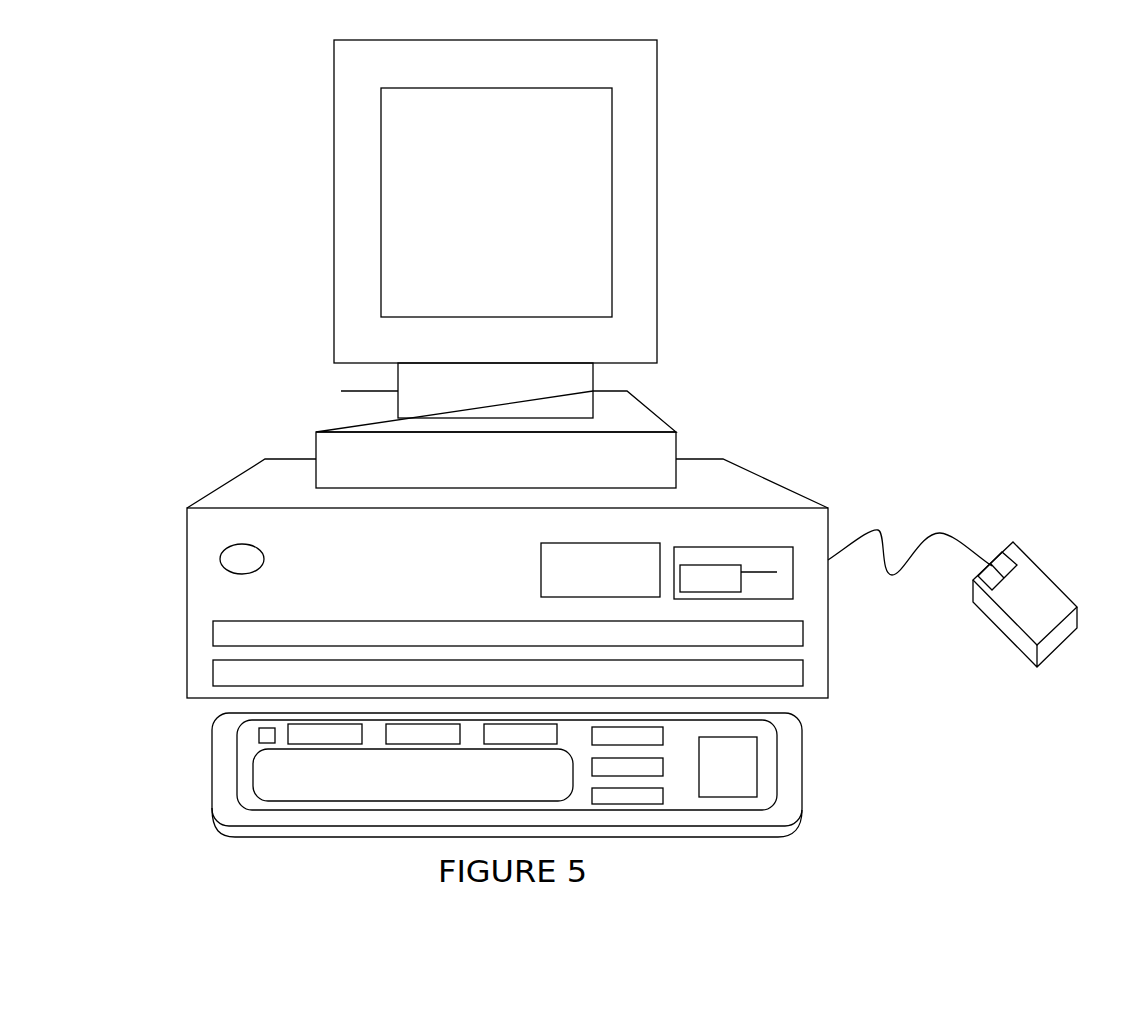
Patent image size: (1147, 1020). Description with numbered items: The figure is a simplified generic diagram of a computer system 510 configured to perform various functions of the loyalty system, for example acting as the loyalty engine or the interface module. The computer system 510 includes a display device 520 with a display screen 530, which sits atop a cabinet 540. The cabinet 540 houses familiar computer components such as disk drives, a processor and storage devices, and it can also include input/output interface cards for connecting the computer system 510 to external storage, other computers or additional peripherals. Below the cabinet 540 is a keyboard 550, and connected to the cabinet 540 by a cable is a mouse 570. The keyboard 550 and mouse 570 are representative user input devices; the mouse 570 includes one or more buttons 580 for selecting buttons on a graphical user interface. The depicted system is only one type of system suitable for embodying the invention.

The computer system 510 is at (816, 109).
The display device 520 is at (530, 264).
The display screen 530 is at (612, 110).
The cabinet 540 is at (735, 480).
The keyboard 550 is at (802, 778).
The mouse 570 is at (975, 592).
The buttons 580 is at (982, 575).